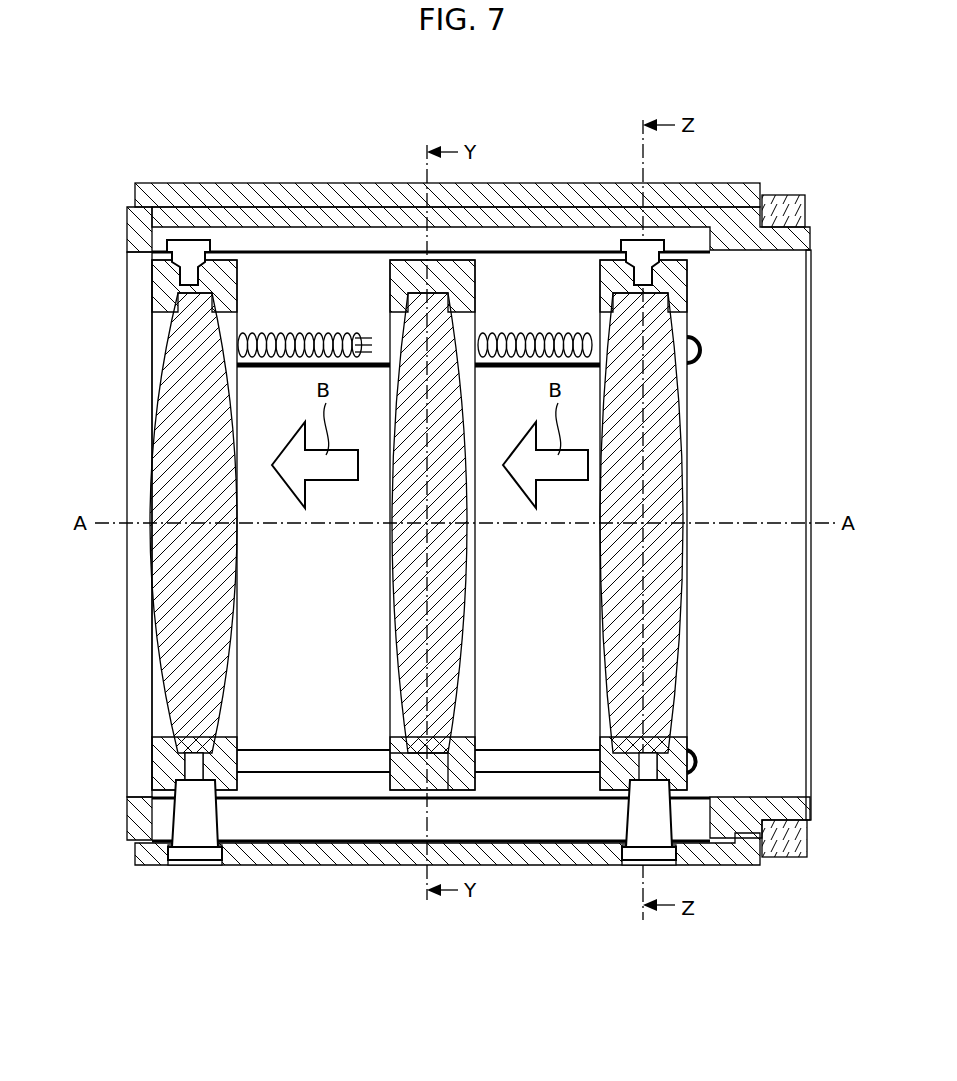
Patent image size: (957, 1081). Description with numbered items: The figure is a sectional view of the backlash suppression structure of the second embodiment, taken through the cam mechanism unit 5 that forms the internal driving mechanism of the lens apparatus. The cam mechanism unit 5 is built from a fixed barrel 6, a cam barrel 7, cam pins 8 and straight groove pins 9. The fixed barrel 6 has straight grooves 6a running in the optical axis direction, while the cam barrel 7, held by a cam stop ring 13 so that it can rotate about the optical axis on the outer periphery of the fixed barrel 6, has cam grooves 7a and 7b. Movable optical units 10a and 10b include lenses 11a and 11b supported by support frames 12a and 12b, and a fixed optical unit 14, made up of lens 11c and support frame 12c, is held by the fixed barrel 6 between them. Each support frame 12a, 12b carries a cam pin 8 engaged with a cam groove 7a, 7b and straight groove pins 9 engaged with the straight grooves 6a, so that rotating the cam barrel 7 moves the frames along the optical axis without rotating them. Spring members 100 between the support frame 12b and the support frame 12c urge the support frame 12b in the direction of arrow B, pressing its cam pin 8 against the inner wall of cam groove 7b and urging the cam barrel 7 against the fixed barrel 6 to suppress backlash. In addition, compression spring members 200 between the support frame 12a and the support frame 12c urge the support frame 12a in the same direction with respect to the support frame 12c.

The cam mechanism unit 5 is at (110, 172).
The fixed barrel 6 is at (742, 228).
The straight grooves 6a is at (262, 240).
The cam barrel 7 is at (745, 866).
The cam groove 7a is at (200, 866).
The cam groove 7b is at (650, 867).
The cam pins 8 is at (178, 805).
The straight groove pins 9 is at (184, 243).
The movable optical unit 10a is at (152, 603).
The movable optical unit 10b is at (593, 620).
The lens 11a is at (178, 432).
The lens 11b is at (657, 452).
The lens 11c is at (412, 553).
The support frame 12a is at (165, 290).
The support frame 12b is at (667, 280).
The support frame 12c is at (412, 290).
The cam stop ring 13 is at (790, 210).
The fixed optical unit 14 is at (385, 611).
The spring members 100 is at (527, 343).
The spring members 200 is at (285, 343).